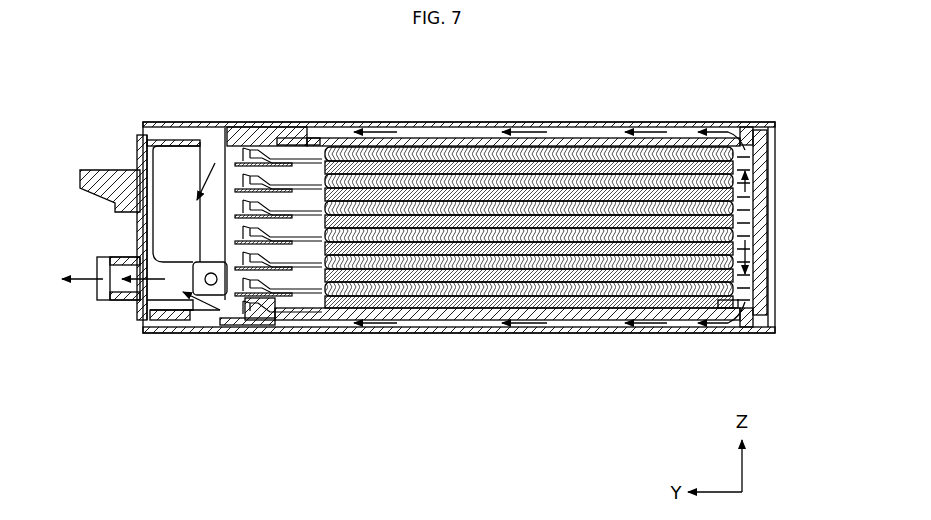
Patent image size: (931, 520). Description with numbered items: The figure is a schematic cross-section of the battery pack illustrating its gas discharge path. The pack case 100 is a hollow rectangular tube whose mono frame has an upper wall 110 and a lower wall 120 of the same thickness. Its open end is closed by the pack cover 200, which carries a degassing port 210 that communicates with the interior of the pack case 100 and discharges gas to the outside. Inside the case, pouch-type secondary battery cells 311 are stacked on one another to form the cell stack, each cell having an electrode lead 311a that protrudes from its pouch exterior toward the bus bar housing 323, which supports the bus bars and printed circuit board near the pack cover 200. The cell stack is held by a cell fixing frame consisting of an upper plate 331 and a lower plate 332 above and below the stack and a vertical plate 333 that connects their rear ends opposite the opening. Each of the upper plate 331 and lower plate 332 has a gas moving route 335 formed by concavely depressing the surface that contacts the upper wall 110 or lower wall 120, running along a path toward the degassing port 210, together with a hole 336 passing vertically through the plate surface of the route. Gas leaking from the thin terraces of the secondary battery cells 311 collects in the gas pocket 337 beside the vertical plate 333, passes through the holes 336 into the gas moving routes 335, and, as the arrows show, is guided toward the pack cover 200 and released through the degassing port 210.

The pack case 100 is at (240, 115).
The upper wall 110 is at (592, 122).
The lower wall 120 is at (592, 333).
The pack cover 200 is at (132, 153).
The degassing port 210 is at (103, 292).
The secondary battery cell 311 is at (412, 160).
The electrode lead 311a is at (262, 128).
The bus bar housing 323 is at (261, 333).
The upper plate 331 is at (348, 138).
The lower plate 332 is at (410, 320).
The vertical plate 333 is at (770, 190).
The gas moving route 335 is at (463, 130).
The hole 336 is at (742, 135).
The gas pocket 337 is at (745, 235).